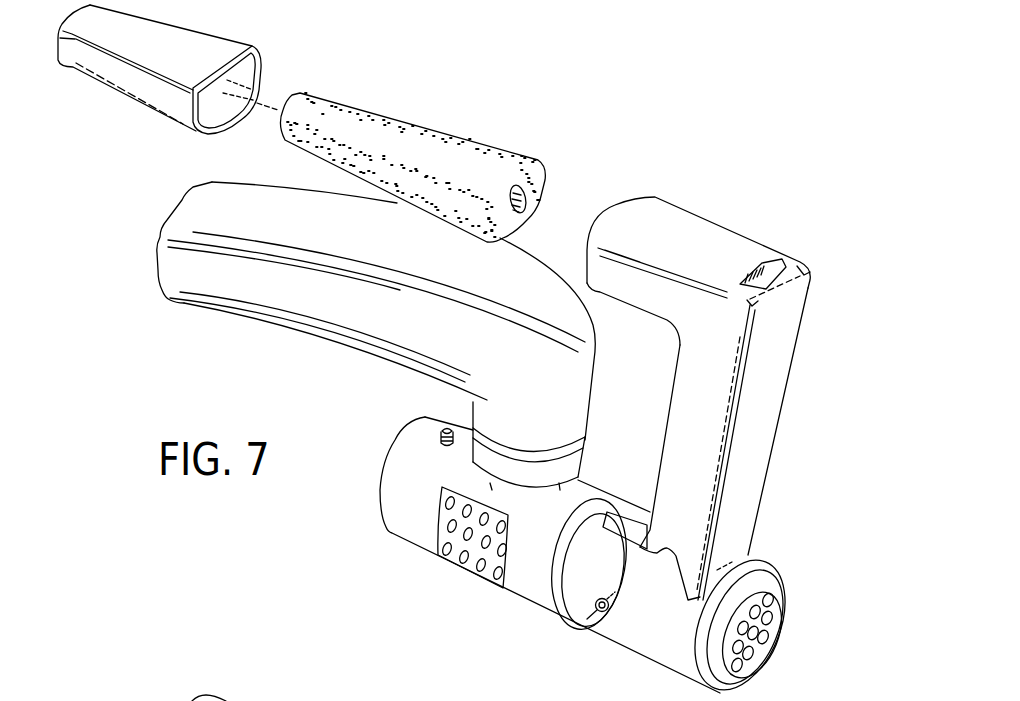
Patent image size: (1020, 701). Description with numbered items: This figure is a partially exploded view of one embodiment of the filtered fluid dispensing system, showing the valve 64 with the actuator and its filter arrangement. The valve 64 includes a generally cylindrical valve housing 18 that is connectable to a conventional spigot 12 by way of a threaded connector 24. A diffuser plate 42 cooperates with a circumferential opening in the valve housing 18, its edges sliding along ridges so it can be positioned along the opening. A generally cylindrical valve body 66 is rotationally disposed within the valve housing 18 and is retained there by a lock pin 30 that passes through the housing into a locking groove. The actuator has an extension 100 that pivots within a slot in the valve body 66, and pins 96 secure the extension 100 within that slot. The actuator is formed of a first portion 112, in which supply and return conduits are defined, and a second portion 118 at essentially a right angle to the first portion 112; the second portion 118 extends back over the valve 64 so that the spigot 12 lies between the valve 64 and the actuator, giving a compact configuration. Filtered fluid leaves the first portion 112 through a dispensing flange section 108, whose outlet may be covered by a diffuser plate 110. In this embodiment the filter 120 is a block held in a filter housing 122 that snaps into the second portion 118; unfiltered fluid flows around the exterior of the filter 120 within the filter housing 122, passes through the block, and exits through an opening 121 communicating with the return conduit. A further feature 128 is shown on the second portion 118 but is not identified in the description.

The spigot 12 is at (376, 311).
The valve housing 18 is at (550, 555).
The threaded connector 24 is at (529, 443).
The lock pin 30 is at (427, 415).
The diffuser plate 42 is at (473, 559).
The valve 64 is at (365, 500).
The valve body 66 is at (577, 564).
The pins 96 is at (591, 642).
The extension 100 is at (626, 567).
The dispensing flange section 108 is at (761, 624).
The diffuser plate 110 is at (765, 638).
The first portion 112 is at (735, 444).
The second portion 118 is at (698, 241).
The filter 120 is at (412, 156).
The opening 121 is at (544, 207).
The filter housing 122 is at (168, 67).
The slot 128 is at (759, 242).